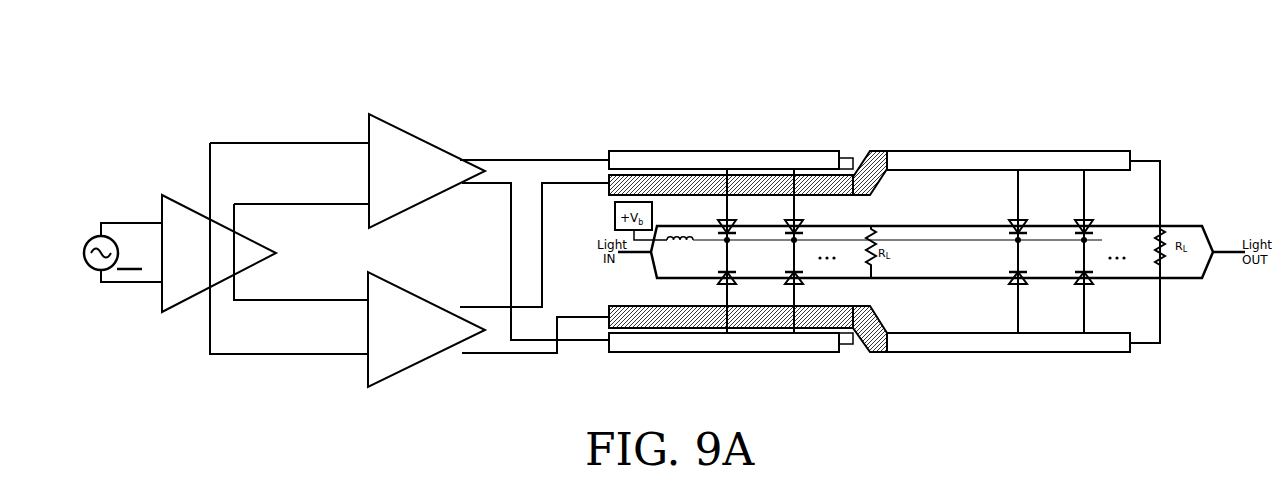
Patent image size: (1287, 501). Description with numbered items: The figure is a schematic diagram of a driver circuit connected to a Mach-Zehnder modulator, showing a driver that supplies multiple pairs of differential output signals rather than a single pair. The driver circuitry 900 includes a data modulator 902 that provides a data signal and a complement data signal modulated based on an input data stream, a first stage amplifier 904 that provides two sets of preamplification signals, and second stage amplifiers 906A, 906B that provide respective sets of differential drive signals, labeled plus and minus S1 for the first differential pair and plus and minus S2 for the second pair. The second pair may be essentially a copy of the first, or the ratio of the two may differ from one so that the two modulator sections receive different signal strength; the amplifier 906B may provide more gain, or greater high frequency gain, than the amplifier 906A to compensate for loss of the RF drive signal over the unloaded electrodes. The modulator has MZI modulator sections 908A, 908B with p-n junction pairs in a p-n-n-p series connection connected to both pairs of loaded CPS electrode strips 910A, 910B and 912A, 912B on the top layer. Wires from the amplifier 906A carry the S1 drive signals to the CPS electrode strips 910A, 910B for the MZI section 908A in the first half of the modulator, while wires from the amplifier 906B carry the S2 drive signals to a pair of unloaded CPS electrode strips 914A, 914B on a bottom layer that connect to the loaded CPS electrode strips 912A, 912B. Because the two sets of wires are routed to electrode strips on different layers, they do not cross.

The driver circuitry 900 is at (498, 60).
The data modulator 902 is at (97, 237).
The first stage amplifier 904 is at (178, 196).
The second stage amplifier 906A is at (420, 128).
The second stage amplifier 906B is at (412, 368).
The MZI modulator section 908A is at (893, 207).
The MZI modulator section 908B is at (985, 294).
The loaded CPS electrode strip 910A is at (752, 151).
The loaded CPS electrode strip 910B is at (730, 352).
The loaded CPS electrode strip 912A is at (1015, 151).
The loaded CPS electrode strip 912B is at (1020, 352).
The unloaded CPS electrode strip 914A is at (853, 151).
The unloaded CPS electrode strip 914B is at (855, 352).